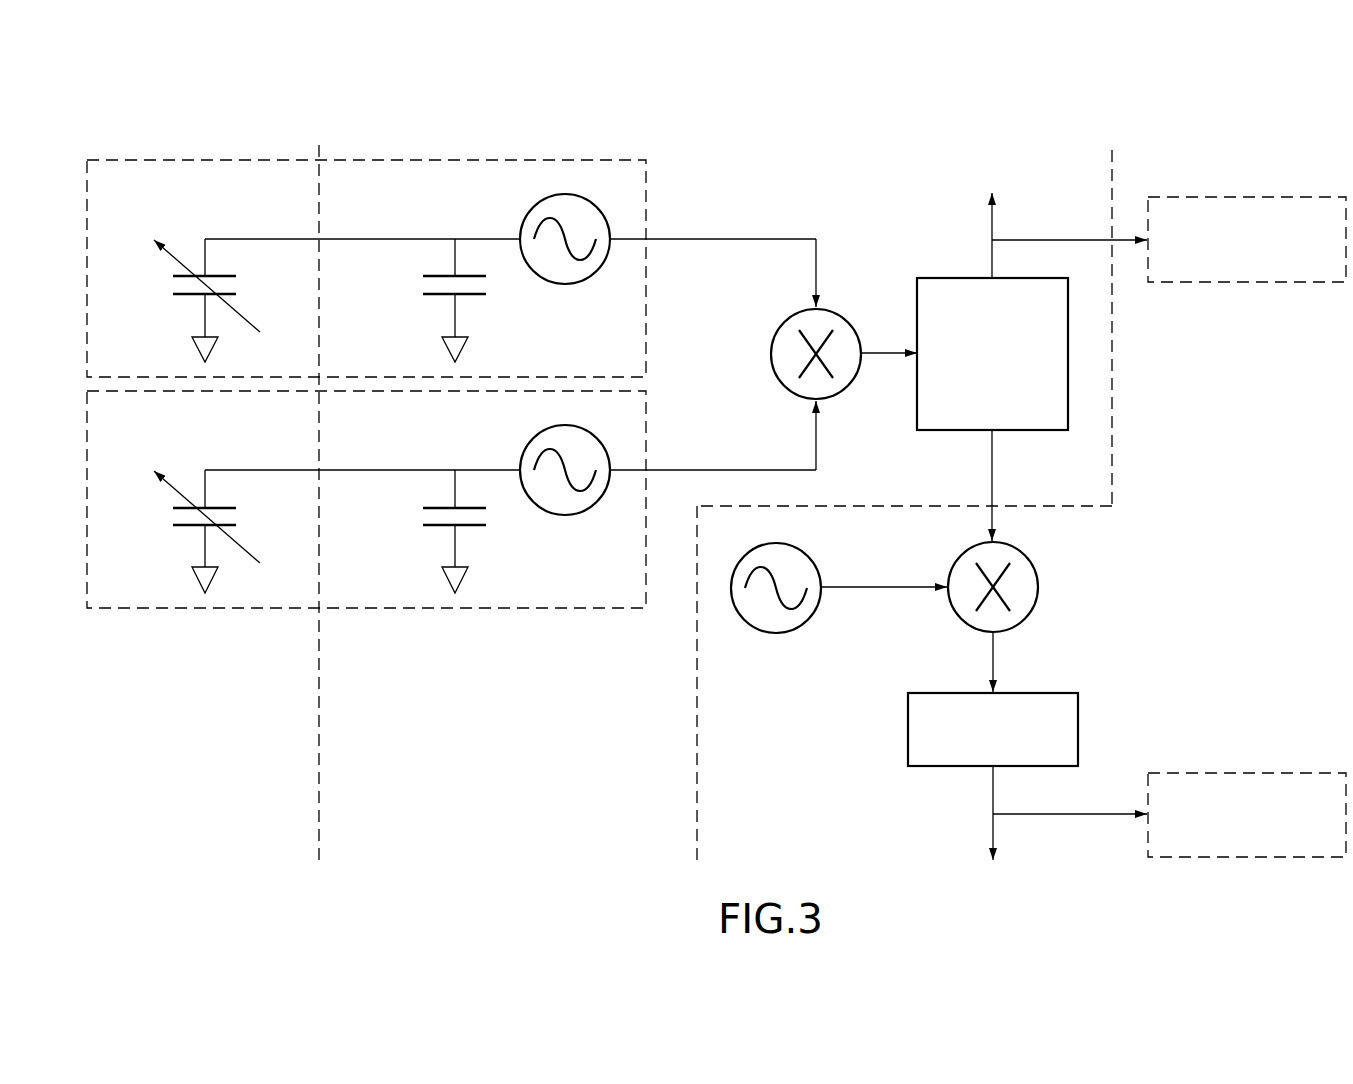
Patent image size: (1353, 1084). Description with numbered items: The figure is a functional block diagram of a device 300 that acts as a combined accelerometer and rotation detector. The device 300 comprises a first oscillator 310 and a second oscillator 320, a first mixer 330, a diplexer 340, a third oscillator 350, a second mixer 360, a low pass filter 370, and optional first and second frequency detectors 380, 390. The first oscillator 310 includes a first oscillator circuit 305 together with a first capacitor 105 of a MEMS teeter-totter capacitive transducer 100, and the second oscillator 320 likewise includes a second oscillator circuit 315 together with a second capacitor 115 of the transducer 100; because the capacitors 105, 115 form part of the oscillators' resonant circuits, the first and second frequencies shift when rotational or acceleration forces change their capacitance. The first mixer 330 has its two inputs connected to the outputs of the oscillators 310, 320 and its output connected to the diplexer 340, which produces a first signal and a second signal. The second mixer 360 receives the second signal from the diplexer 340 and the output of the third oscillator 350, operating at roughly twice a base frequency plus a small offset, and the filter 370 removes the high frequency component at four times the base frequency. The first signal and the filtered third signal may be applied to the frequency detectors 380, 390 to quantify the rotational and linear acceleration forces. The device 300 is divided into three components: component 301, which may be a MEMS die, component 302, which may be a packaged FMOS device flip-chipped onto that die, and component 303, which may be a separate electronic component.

The MEMS teeter-totter capacitive transducer 100 is at (197, 642).
The first capacitor 105 is at (173, 310).
The second capacitor 115 is at (173, 542).
The device 300 is at (1212, 138).
The component 301 is at (285, 502).
The component 302 is at (584, 547).
The component 303 is at (861, 642).
The first oscillator circuit 305 is at (527, 214).
The first oscillator 310 is at (646, 182).
The second oscillator circuit 315 is at (527, 445).
The second oscillator 320 is at (646, 413).
The first mixer 330 is at (780, 327).
The diplexer 340 is at (918, 278).
The third oscillator 350 is at (818, 602).
The second mixer 360 is at (1038, 577).
The filter 370 is at (908, 730).
The first frequency detector 380 is at (1272, 282).
The second frequency detector 390 is at (1248, 773).